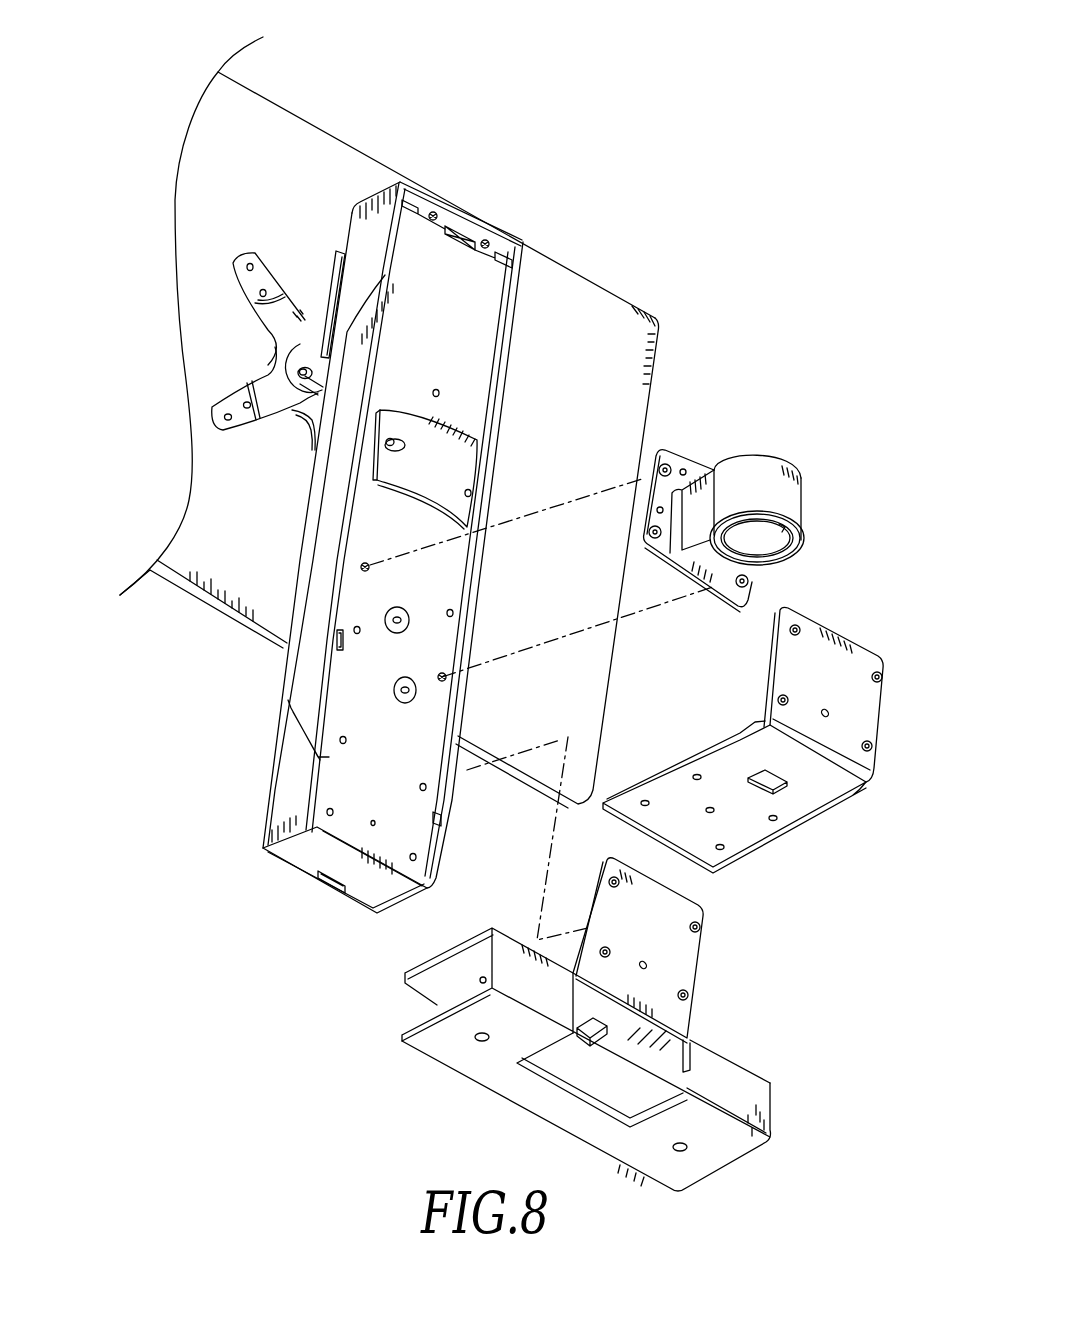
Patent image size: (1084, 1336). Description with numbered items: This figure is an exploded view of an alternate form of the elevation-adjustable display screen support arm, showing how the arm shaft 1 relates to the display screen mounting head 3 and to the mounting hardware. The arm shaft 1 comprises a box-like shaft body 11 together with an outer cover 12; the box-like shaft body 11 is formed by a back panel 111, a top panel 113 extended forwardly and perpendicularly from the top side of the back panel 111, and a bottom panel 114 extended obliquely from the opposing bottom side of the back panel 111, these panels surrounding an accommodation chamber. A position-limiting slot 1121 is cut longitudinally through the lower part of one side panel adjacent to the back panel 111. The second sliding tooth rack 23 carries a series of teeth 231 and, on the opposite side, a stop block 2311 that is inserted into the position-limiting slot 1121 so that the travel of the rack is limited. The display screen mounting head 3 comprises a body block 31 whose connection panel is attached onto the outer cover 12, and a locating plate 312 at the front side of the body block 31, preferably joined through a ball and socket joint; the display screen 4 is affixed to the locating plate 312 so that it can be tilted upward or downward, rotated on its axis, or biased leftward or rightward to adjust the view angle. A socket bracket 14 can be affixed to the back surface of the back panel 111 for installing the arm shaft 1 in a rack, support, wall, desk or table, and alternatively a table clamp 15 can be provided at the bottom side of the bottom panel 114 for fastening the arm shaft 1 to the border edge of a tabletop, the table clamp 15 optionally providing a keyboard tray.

The arm shaft 1 is at (481, 673).
The display screen mounting head 3 is at (376, 78).
The display screen 4 is at (572, 305).
The body block 31 is at (296, 253).
The locating plate 312 is at (258, 265).
The box-like shaft body 11 is at (315, 534).
The outer cover 12 is at (286, 806).
The back panel 111 is at (356, 787).
The top panel 113 is at (455, 228).
The bottom panel 114 is at (304, 864).
The position-limiting slot 1121 is at (335, 712).
The second sliding tooth rack 23 is at (337, 680).
The series of teeth 231 is at (211, 656).
The stop block 2311 is at (338, 645).
The socket bracket 14 is at (780, 492).
The table clamp 15 is at (673, 912).